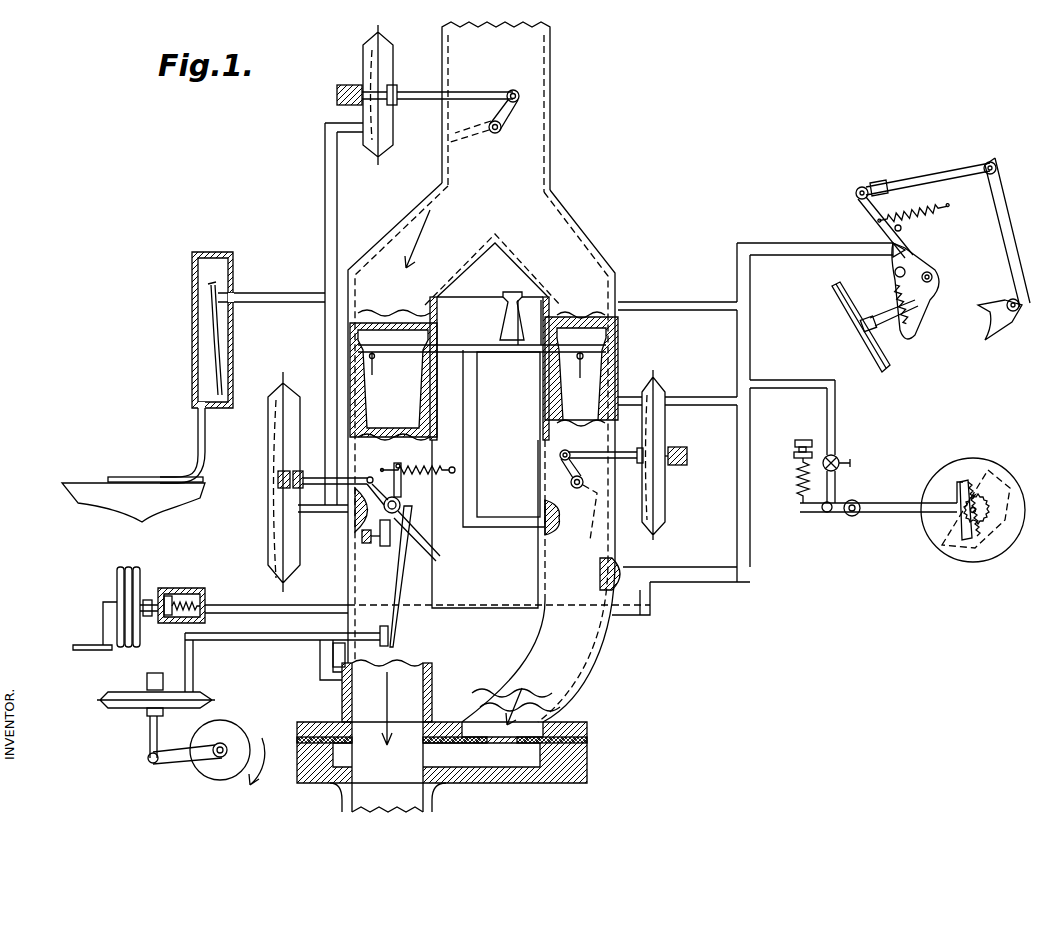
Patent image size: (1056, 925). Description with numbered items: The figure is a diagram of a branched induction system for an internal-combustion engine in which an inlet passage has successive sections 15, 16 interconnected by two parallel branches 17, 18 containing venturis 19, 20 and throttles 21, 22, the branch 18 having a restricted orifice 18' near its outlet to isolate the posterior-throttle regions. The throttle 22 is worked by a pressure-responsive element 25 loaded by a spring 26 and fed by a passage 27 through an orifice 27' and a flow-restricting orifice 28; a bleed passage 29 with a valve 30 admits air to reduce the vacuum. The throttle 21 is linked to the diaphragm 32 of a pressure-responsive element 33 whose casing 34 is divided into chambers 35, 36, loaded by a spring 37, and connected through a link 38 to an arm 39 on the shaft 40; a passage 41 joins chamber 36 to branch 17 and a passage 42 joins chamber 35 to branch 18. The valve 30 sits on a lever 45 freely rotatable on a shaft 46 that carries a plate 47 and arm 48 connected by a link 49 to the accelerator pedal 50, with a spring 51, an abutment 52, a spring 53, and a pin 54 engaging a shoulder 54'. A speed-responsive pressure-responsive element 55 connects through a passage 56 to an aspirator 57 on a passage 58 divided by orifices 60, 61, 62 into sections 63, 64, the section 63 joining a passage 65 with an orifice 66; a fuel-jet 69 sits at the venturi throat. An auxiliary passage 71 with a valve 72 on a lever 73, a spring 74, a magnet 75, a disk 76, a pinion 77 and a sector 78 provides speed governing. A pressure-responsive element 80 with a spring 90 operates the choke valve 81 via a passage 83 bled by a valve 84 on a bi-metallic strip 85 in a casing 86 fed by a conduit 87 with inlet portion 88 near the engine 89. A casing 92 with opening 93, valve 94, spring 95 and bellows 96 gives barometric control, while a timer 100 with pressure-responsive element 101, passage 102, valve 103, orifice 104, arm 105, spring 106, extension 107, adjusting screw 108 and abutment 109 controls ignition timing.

The inlet passage section 15 is at (552, 137).
The inlet passage section 16 is at (432, 797).
The branch 17 is at (404, 222).
The branch 18 is at (551, 457).
The restricted orifice 18' is at (442, 767).
The venturi 19 is at (393, 375).
The venturi 20 is at (581, 369).
The throttle 21 is at (402, 510).
The throttle 22 is at (598, 495).
The pressure-responsive element 25 is at (665, 515).
The spring 26 is at (680, 468).
The passage 27 is at (681, 591).
The orifice 27' is at (642, 563).
The flow-restricting orifice 28 is at (735, 427).
The bleed passage 29 is at (798, 243).
The valve 30 is at (915, 252).
The diaphragm 32 is at (276, 445).
The pressure-responsive element 33 is at (274, 400).
The casing 34 is at (270, 428).
The chamber 35 is at (268, 540).
The chamber 36 is at (296, 547).
The spring 37 is at (298, 470).
The link 38 is at (350, 486).
The arm 39 is at (368, 477).
The shaft 40 is at (405, 512).
The passage 41 is at (312, 513).
The passage 42 is at (300, 605).
The lever 45 is at (938, 300).
The shaft 46 is at (895, 274).
The plate 47 is at (918, 328).
The arm 48 is at (855, 200).
The link 49 is at (942, 168).
The accelerator pedal 50 is at (1014, 213).
The spring 51 is at (943, 205).
The abutment 52 is at (902, 228).
The spring 53 is at (893, 304).
The pin 54 is at (949, 266).
The shoulder 54' is at (963, 284).
The pressure-responsive element 55 is at (890, 366).
The passage 56 is at (676, 299).
The aspirator 57 is at (503, 296).
The passage 58 is at (484, 352).
The restrictive orifice 60 is at (448, 345).
The restrictive orifice 61 is at (478, 345).
The restrictive orifice 62 is at (529, 322).
The passage-section 63 is at (462, 353).
The passage-section 64 is at (518, 352).
The passage 65 is at (500, 517).
The restrictive orifice 66 is at (466, 356).
The fuel-jet 69 is at (612, 368).
The auxiliary passage 71 is at (838, 428).
The valve 72 is at (829, 514).
The lever 73 is at (896, 514).
The spring 74 is at (797, 480).
The permanent magnet 75 is at (1005, 490).
The disk 76 is at (976, 458).
The pinion 77 is at (978, 528).
The sector 78 is at (845, 463).
The pressure-responsive element 80 is at (365, 68).
The choke valve 81 is at (450, 150).
The passage 83 is at (325, 218).
The valve 84 is at (232, 282).
The bi-metallic strip 85 is at (210, 350).
The casing 86 is at (192, 297).
The conduit 87 is at (198, 428).
The inlet portion 88 is at (128, 476).
The engine 89 is at (118, 495).
The spring 90 is at (337, 96).
The casing 92 is at (203, 588).
The air-bleed opening 93 is at (166, 596).
The valve 94 is at (170, 623).
The spring 95 is at (201, 600).
The bellows 96 is at (142, 572).
The timer 100 is at (245, 712).
The pressure-responsive element 101 is at (120, 692).
The passage 102 is at (266, 643).
The valve 103 is at (378, 633).
The restricted orifice 104 is at (322, 660).
The arm 105 is at (402, 592).
The spring 106 is at (442, 466).
The extension 107 is at (382, 548).
The adjusting screw 108 is at (362, 540).
The abutment 109 is at (396, 463).